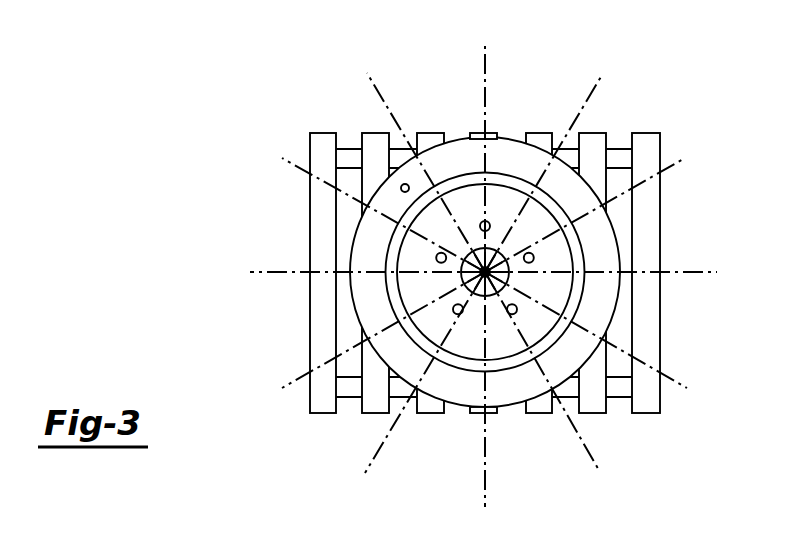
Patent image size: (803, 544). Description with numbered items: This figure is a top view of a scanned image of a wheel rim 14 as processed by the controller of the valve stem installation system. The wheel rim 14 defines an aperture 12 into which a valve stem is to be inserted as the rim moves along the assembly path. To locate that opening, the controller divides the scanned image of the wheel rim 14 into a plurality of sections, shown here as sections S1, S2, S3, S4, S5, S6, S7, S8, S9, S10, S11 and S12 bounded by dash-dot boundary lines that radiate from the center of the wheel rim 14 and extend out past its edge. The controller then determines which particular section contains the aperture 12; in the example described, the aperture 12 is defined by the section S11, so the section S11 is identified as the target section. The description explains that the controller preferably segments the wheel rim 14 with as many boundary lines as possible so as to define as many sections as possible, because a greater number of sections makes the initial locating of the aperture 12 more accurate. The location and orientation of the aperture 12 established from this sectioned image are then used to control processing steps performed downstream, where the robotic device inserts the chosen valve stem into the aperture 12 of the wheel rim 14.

The aperture 12 is at (401, 188).
The wheel rim 14 is at (602, 242).
The section S1 is at (485, 114).
The section S2 is at (570, 125).
The section S3 is at (683, 157).
The section S4 is at (697, 272).
The section S5 is at (673, 372).
The section S6 is at (578, 430).
The section S7 is at (485, 488).
The section S8 is at (375, 458).
The section S9 is at (292, 385).
The section S10 is at (260, 275).
The target section S11 is at (285, 160).
The section line S12 is at (383, 95).